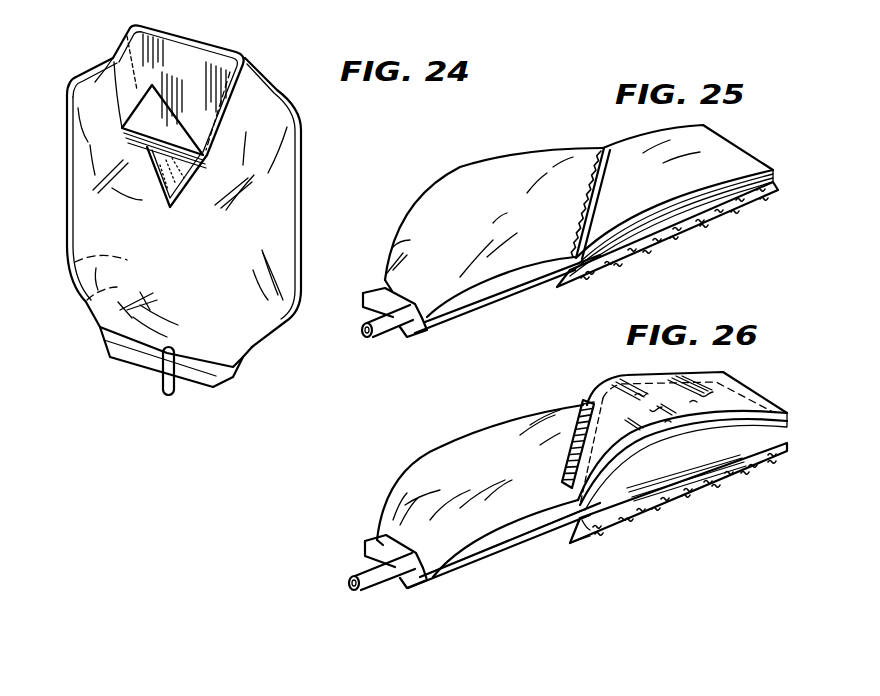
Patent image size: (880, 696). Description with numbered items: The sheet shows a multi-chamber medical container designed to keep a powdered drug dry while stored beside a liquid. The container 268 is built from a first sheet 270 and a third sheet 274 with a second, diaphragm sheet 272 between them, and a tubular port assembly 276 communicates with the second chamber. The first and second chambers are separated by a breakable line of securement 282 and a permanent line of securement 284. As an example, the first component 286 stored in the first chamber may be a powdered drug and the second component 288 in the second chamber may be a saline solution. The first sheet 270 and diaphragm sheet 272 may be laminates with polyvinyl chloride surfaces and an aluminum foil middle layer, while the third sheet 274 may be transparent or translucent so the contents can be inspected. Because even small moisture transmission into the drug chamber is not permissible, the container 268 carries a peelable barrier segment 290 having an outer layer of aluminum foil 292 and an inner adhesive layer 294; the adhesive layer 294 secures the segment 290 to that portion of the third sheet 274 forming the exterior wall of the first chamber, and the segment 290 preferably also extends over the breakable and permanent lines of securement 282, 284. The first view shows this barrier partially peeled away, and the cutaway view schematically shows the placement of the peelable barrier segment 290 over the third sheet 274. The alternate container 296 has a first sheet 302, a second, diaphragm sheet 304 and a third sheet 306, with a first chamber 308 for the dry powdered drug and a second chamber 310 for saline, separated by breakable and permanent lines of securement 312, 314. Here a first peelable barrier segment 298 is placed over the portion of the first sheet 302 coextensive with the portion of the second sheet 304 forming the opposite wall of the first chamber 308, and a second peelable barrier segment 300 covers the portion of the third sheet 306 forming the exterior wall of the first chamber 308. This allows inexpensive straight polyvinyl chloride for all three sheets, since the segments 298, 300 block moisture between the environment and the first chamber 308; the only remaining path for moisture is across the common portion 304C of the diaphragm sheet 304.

In FIG. 24, the container 268 is at (57, 81).
In FIG. 25, the container 268 is at (478, 166).
In FIG. 24, the first sheet 270 is at (73, 278).
In FIG. 25, the first sheet 270 is at (633, 139).
In FIG. 24, the second, diaphragm sheet 272 is at (88, 306).
In FIG. 25, the second, diaphragm sheet 272 is at (687, 191).
In FIG. 24, the third sheet 274 is at (80, 231).
In FIG. 25, the third sheet 274 is at (508, 295).
In FIG. 24, the tubular port assembly 276 is at (172, 397).
In FIG. 24, the breakable line of securement 282 is at (130, 145).
In FIG. 24, the permanent line of securement 284 is at (140, 198).
In FIG. 24, the first component 286 is at (225, 181).
In FIG. 24, the second component 288 is at (268, 261).
In FIG. 24, the peelable barrier segment 290 is at (193, 58).
In FIG. 25, the peelable barrier segment 290 is at (628, 260).
In FIG. 24, the outer layer of aluminum foil 292 is at (205, 105).
In FIG. 24, the inner adhesive layer 294 is at (112, 56).
In FIG. 26, the container 296 is at (397, 456).
In FIG. 26, the first peelable barrier segment 298 is at (636, 380).
In FIG. 26, the second peelable barrier segment 300 is at (578, 538).
In FIG. 26, the first sheet 302 is at (467, 455).
In FIG. 26, the second, diaphragm sheet 304 is at (493, 546).
In FIG. 26, the common portion 304C is at (590, 527).
In FIG. 26, the third sheet 306 is at (738, 468).
In FIG. 26, the first chamber 308 is at (640, 496).
In FIG. 26, the second chamber 310 is at (455, 570).
In FIG. 26, the breakable line of securement 312 is at (570, 483).
In FIG. 26, the permanent line of securement 314 is at (592, 500).